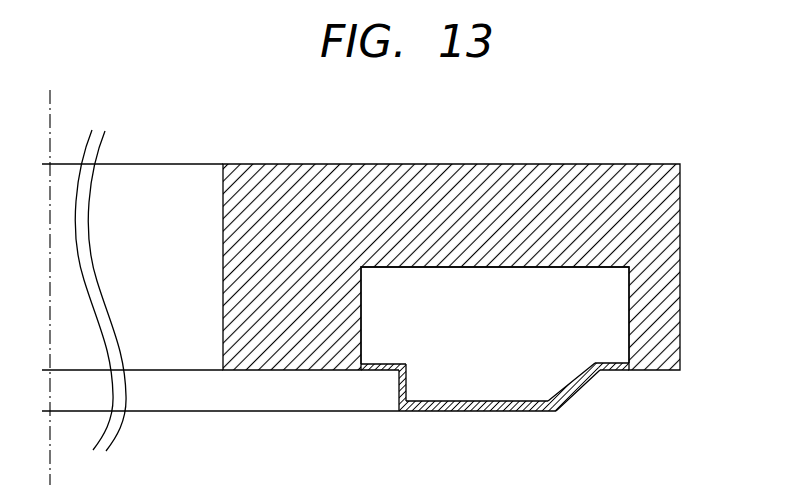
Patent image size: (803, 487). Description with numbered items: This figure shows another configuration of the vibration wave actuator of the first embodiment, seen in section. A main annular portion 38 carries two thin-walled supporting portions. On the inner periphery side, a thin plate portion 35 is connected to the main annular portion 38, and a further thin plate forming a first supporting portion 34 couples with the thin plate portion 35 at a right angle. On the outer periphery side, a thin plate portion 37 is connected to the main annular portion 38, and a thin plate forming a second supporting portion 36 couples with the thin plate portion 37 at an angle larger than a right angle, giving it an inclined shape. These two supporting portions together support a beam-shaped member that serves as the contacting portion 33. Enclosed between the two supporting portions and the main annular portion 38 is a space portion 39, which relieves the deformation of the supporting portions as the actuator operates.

The contacting portion 33 is at (477, 407).
The first supporting portion 34 is at (400, 383).
The thin plate portion 35 is at (375, 371).
The second supporting portion 36 is at (577, 391).
The thin plate portion 37 is at (610, 362).
The main annular portion 38 is at (410, 180).
The space portion 39 is at (540, 333).